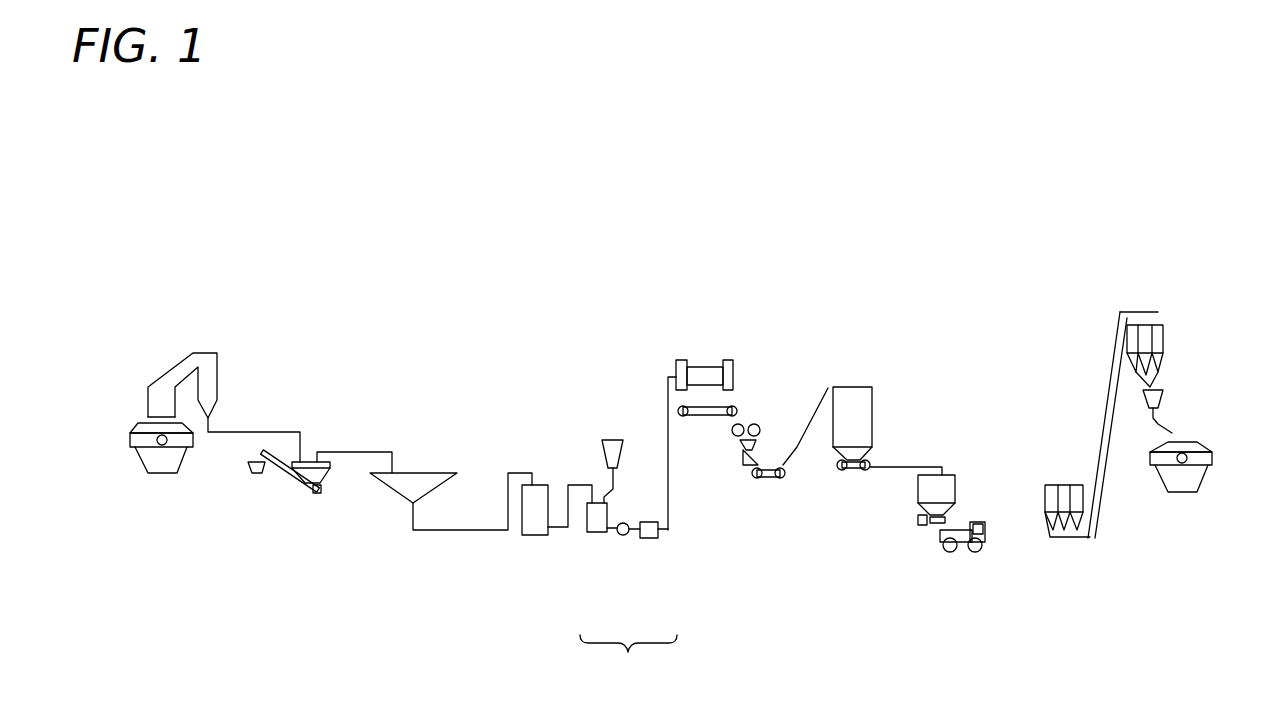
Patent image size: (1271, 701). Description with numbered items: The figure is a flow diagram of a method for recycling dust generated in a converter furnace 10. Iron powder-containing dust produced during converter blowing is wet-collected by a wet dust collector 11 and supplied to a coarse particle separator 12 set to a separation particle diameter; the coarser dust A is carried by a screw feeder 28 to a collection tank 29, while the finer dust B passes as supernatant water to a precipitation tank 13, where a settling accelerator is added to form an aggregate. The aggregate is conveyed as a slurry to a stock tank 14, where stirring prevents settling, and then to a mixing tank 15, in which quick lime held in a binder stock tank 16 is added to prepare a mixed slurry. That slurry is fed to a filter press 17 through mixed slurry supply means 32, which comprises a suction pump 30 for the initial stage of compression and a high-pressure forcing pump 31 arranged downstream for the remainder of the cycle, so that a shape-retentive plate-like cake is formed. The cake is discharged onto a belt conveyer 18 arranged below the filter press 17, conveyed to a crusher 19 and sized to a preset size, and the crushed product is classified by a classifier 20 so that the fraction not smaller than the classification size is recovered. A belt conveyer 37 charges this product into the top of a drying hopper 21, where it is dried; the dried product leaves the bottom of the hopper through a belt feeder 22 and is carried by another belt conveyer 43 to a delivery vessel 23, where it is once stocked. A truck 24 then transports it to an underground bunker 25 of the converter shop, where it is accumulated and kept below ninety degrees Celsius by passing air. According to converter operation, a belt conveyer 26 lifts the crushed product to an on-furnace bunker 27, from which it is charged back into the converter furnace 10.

The converter furnace 10 is at (150, 455).
The wet dust collector 11 is at (208, 380).
The coarse particle separator 12 is at (323, 477).
The precipitation tank 13 is at (413, 478).
The stock tank 14 is at (532, 483).
The mixing tank 15 is at (592, 502).
The binder stock tank 16 is at (612, 438).
The filter press 17 is at (682, 370).
The belt conveyer 18 is at (725, 402).
The crusher 19 is at (735, 447).
The classifier 20 is at (748, 463).
The drying hopper 21 is at (842, 385).
The belt feeder 22 is at (850, 470).
The delivery vessel 23 is at (958, 485).
The truck 24 is at (962, 552).
The underground bunker 25 is at (1082, 520).
The belt conveyer 26 is at (1108, 393).
The on-furnace bunker 27 is at (1130, 337).
The screw feeder 28 is at (302, 480).
The collection tank 29 is at (245, 472).
The suction pump 30 is at (620, 537).
The high-pressure forcing pump 31 is at (650, 540).
The mixed slurry supply means 32 is at (628, 664).
The belt conveyer 37 is at (798, 447).
The belt conveyer 43 is at (890, 467).